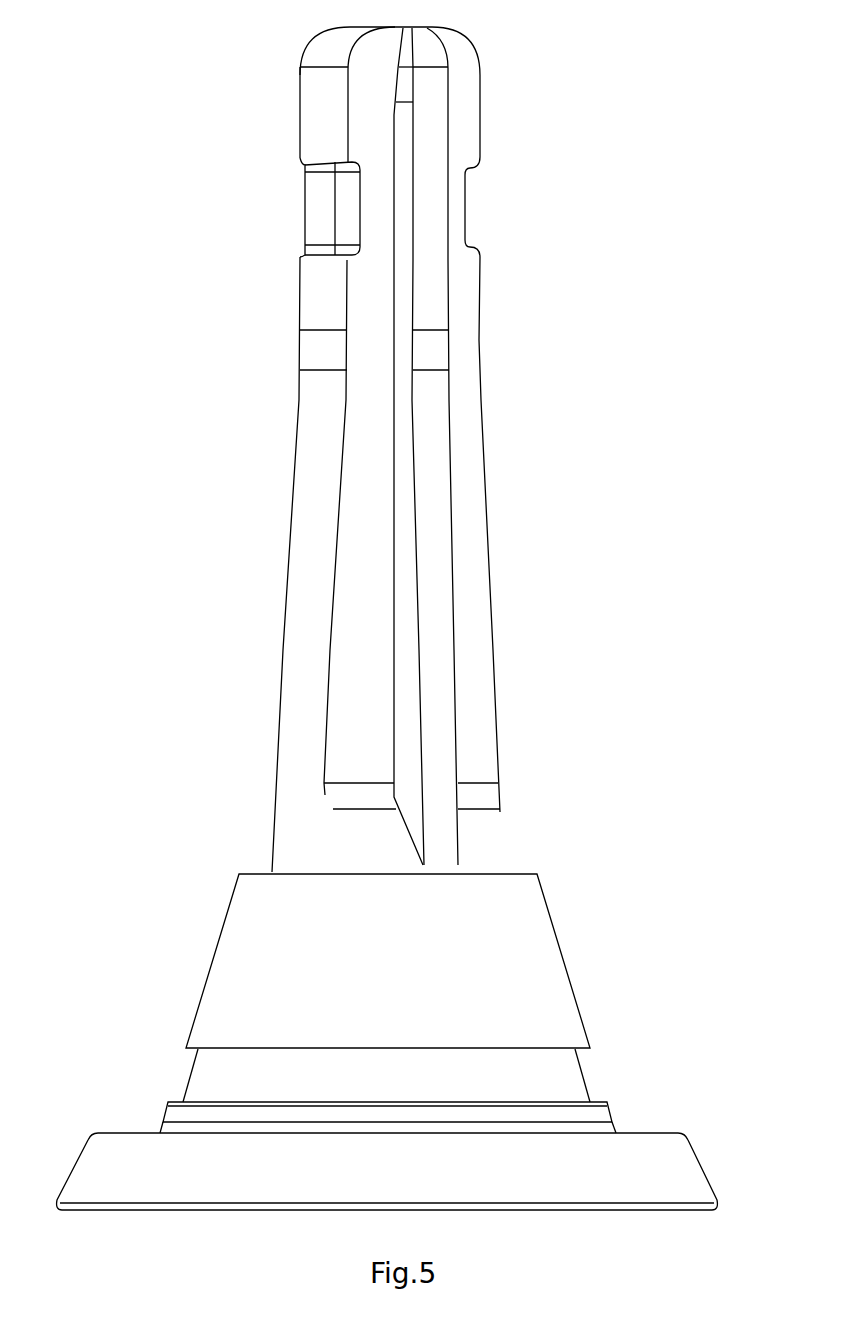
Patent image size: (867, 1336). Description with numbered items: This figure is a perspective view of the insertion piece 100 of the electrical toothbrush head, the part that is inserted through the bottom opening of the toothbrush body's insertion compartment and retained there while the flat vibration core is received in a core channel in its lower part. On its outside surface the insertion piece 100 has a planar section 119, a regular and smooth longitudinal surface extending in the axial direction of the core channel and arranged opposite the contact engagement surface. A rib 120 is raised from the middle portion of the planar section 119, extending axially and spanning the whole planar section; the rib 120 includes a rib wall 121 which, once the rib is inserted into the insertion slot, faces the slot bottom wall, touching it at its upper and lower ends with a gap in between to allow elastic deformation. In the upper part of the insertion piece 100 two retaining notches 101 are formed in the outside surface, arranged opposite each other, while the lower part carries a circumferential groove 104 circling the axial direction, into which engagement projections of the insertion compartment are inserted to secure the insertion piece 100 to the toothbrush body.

The insertion piece 100 is at (522, 985).
The retaining notches 101 is at (348, 217).
The circumferential groove 104 is at (563, 1082).
The planar section 119 is at (467, 432).
The rib 120 is at (409, 538).
The rib wall 121 is at (435, 517).